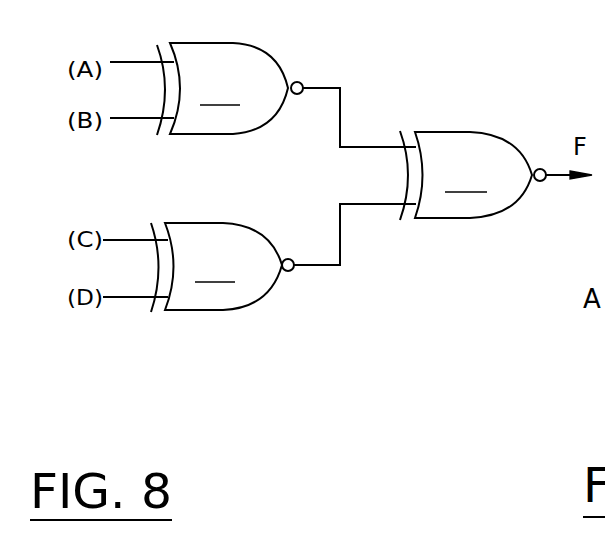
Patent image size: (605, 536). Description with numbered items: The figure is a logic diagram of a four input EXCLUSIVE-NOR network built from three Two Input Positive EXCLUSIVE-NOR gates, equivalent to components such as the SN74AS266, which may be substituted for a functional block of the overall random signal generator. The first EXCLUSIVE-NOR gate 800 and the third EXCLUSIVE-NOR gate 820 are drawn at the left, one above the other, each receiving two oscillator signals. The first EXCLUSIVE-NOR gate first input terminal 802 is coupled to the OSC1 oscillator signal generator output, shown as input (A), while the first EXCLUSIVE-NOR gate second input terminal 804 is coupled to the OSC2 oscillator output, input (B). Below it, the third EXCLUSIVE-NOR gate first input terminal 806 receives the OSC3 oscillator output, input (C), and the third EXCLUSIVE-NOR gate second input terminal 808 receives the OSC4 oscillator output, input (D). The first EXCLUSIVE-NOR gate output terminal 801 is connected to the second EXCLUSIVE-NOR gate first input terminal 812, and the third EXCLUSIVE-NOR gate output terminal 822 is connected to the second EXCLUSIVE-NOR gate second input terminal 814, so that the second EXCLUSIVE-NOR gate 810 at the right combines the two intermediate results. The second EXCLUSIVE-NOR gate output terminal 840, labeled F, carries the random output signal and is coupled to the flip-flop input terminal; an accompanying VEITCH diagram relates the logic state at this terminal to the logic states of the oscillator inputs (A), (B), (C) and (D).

The first EXCLUSIVE-NOR gate 800 is at (222, 89).
The first EXCLUSIVE-NOR gate output terminal 801 is at (293, 80).
The first EXCLUSIVE-NOR gate first input terminal 802 is at (127, 61).
The first EXCLUSIVE-NOR gate second input terminal 804 is at (127, 120).
The third EXCLUSIVE-NOR gate first input terminal 806 is at (122, 236).
The third EXCLUSIVE-NOR gate second input terminal 808 is at (122, 303).
The second EXCLUSIVE-NOR gate 810 is at (466, 175).
The second EXCLUSIVE-NOR gate first input terminal 812 is at (376, 143).
The second EXCLUSIVE-NOR gate second input terminal 814 is at (377, 210).
The third EXCLUSIVE-NOR gate 820 is at (216, 267).
The third EXCLUSIVE-NOR gate output terminal 822 is at (307, 268).
The second EXCLUSIVE-NOR gate output terminal 840 is at (558, 168).